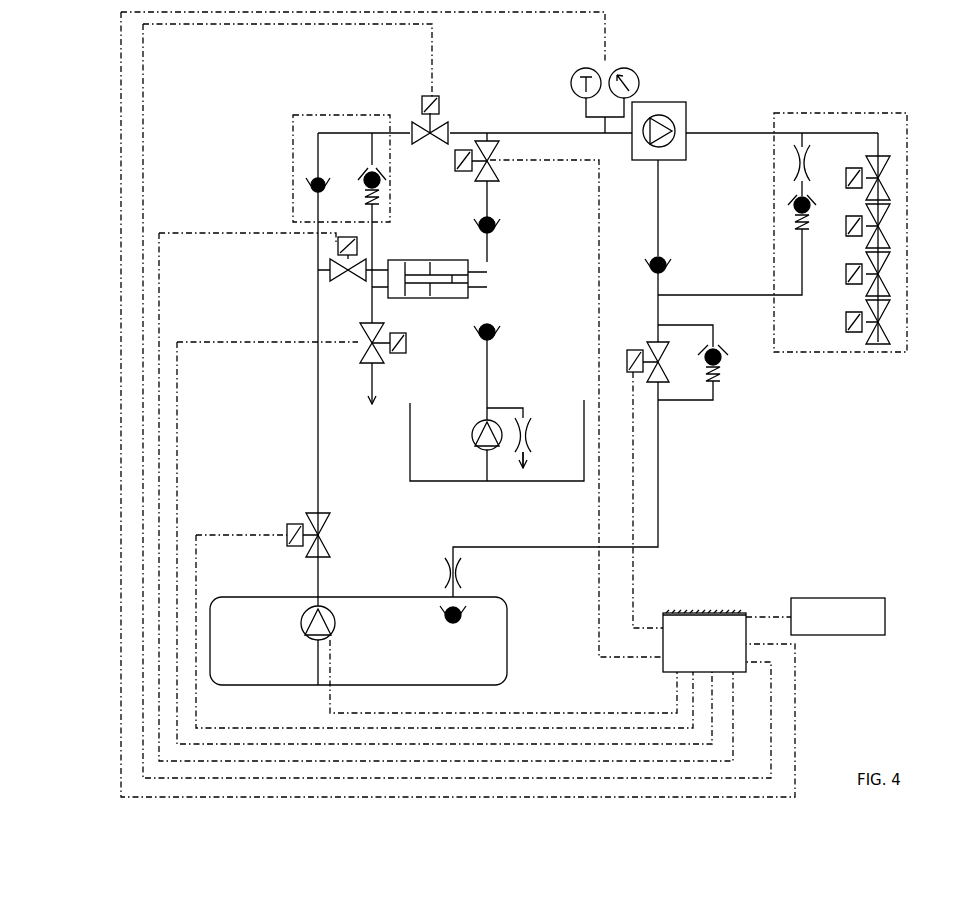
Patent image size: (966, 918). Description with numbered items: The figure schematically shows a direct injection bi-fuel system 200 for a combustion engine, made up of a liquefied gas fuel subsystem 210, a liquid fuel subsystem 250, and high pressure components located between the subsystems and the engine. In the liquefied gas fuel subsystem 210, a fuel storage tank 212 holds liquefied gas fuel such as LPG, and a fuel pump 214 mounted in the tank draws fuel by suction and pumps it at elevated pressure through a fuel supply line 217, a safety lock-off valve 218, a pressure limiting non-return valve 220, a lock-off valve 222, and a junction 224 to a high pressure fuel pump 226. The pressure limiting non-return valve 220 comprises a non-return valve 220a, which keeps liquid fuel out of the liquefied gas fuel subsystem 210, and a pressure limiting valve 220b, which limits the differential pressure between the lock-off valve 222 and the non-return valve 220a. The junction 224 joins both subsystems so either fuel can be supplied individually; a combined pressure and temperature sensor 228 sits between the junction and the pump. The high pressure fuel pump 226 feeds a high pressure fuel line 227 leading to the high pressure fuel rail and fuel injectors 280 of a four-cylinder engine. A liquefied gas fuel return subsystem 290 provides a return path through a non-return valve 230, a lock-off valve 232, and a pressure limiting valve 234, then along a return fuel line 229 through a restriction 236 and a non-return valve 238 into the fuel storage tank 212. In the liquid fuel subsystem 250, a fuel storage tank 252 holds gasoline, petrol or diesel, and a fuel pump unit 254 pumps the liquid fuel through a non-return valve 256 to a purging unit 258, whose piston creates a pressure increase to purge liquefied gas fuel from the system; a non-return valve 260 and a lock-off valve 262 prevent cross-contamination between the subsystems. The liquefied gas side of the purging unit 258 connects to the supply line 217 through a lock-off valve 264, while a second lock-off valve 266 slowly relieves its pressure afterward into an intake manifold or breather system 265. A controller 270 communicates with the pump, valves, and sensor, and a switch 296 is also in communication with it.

The direct injection bi-fuel system 200 is at (78, 145).
The liquefied gas fuel subsystem 210 is at (238, 329).
The fuel storage tank 212 is at (358, 641).
The fuel pump 214 is at (302, 641).
The fuel supply line 217 is at (316, 416).
The safety lock-off valve 218 is at (287, 520).
The pressure limiting non-return valve 220 is at (282, 128).
The non-return valve 220a is at (305, 190).
The pressure limiting valve 220b is at (357, 160).
The lock-off valve 222 is at (431, 94).
The junction 224 is at (487, 128).
The high pressure fuel pump 226 is at (657, 92).
The high pressure fuel line 227 is at (725, 122).
The combined pressure and temperature sensor 228 is at (566, 72).
The return fuel line 229 is at (662, 483).
The non-return valve 230 is at (680, 262).
The lock-off valve 232 is at (621, 349).
The pressure limiting valve 234 is at (733, 369).
The restriction 236 is at (460, 573).
The non-return valve 238 is at (456, 627).
The liquid fuel subsystem 250 is at (521, 302).
The fuel storage tank 252 is at (497, 440).
The fuel pump unit 254 is at (470, 417).
The non-return valve 256 is at (504, 325).
The purging unit 258 is at (425, 253).
The non-return valve 260 is at (503, 225).
The lock-off valve 262 is at (500, 168).
The lock-off valve 264 is at (334, 243).
The intake manifold or liquid fuel breather system 265 is at (373, 396).
The second lock-off valve 266 is at (357, 347).
The controller 270 is at (701, 598).
The high pressure fuel rail and fuel injectors 280 is at (800, 111).
The liquefied gas fuel return subsystem 290 is at (692, 238).
The switch 296 is at (853, 586).